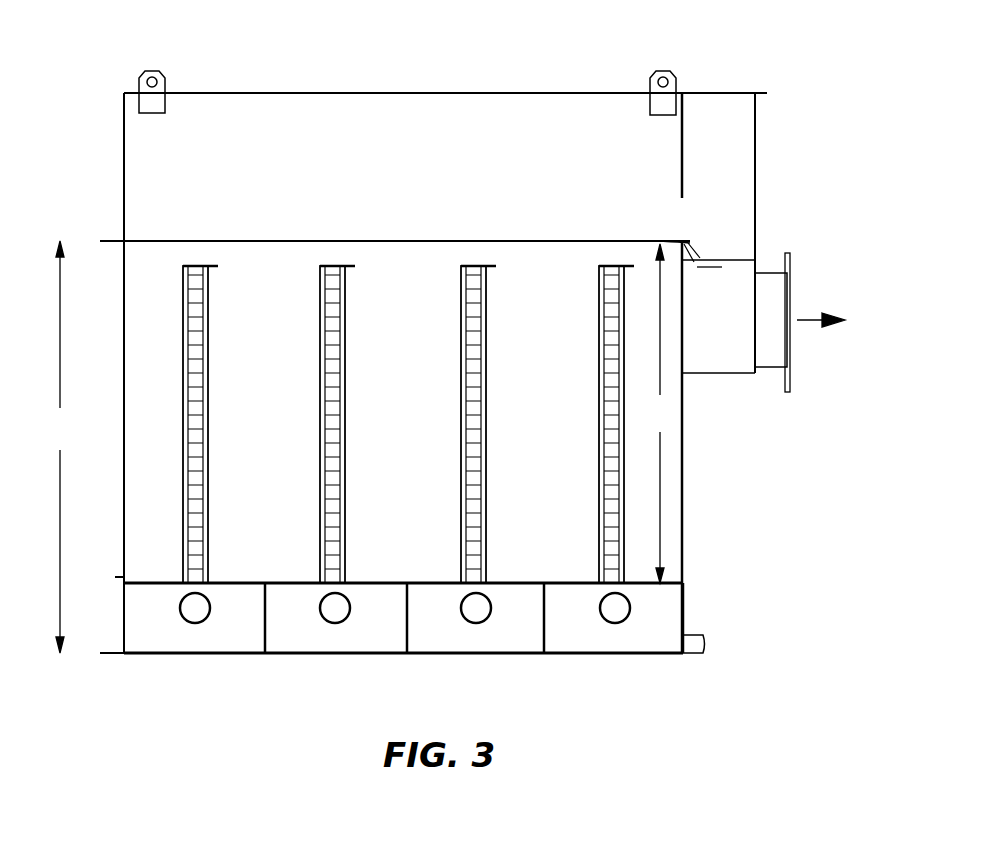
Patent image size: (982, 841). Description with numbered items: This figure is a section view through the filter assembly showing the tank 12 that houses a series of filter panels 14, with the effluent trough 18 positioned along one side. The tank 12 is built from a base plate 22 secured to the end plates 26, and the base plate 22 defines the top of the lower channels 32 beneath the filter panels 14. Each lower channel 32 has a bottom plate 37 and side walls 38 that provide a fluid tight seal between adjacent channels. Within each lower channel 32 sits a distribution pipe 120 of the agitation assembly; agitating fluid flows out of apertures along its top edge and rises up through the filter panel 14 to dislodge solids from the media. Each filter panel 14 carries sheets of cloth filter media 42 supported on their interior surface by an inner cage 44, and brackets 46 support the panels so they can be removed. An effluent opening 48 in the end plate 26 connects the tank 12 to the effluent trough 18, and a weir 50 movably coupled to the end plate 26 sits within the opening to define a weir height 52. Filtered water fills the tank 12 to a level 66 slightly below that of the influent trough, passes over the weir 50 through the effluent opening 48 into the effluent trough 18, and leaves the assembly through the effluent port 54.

The tank 12 is at (238, 92).
The filter panel 14 is at (210, 373).
The effluent trough 18 is at (718, 92).
The base plate 22 is at (235, 585).
The end plate 26 is at (680, 138).
The lower channel 32 is at (212, 643).
The bottom plate 37 is at (613, 660).
The side wall 38 is at (267, 623).
The filter media 42 is at (487, 445).
The inner cage 44 is at (473, 352).
The bracket 46 is at (213, 268).
The effluent opening 48 is at (683, 218).
The weir 50 is at (690, 242).
The weir height 52 is at (662, 413).
The effluent port 54 is at (790, 300).
The level 66 is at (87, 447).
The distribution pipe 120 is at (177, 610).